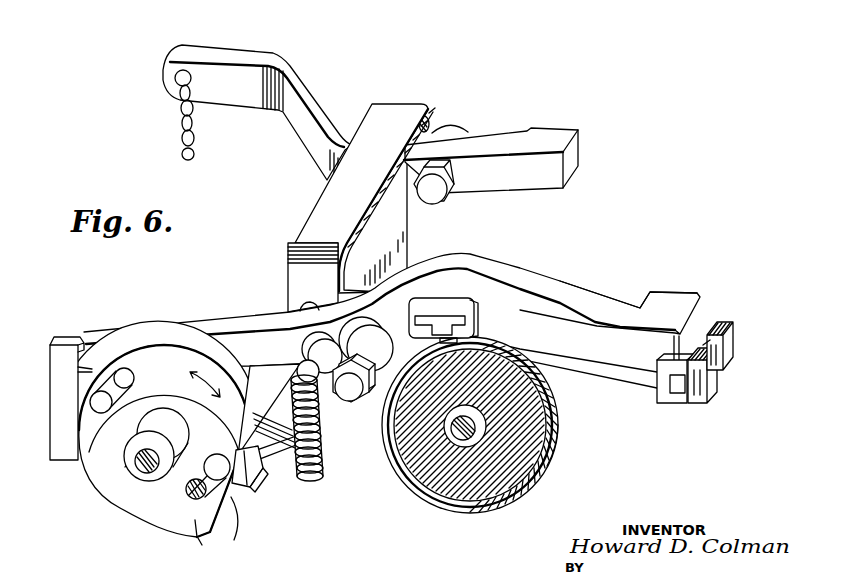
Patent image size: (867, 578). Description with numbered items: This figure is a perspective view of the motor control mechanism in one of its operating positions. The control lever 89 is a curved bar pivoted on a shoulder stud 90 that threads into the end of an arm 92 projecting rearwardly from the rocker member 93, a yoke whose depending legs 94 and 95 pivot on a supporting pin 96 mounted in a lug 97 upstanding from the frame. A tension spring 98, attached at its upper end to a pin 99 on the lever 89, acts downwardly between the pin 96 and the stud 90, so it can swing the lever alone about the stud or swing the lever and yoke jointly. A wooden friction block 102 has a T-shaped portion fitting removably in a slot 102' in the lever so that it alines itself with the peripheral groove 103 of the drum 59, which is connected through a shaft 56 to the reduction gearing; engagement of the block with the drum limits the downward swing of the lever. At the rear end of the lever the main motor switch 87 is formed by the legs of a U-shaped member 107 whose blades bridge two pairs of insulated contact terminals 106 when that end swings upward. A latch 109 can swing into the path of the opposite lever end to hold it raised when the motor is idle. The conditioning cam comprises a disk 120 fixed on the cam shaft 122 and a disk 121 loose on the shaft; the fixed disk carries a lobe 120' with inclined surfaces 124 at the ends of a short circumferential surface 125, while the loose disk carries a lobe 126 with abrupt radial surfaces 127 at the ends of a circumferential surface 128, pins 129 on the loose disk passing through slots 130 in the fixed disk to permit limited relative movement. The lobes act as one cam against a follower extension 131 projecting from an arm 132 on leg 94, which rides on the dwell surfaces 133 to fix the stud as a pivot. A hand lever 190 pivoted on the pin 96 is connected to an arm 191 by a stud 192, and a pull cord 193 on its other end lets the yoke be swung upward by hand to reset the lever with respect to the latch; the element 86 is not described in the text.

The lever 190 is at (323, 126).
The pull cord 193 is at (198, 154).
The depending leg 95 is at (430, 120).
The arm 191 is at (447, 133).
The stud 192 is at (456, 176).
The rocker member 93 is at (316, 224).
The lug 97 is at (413, 214).
The arm 92 is at (378, 287).
The depending leg 94 is at (297, 278).
The supporting pin 96 is at (303, 303).
The lever 89 is at (583, 302).
The main motor switch 87 is at (742, 314).
The slot 102' is at (441, 310).
The pawl guide 86 is at (479, 313).
The block 102 is at (513, 414).
The shoulder stud 90 is at (381, 343).
The drum 59 is at (548, 373).
The peripheral groove 103 is at (544, 422).
The contact terminals 106 is at (727, 340).
The U-shaped member 107 is at (675, 396).
The pin 99 is at (322, 395).
The tension spring 98 is at (318, 472).
The shaft 56 is at (491, 416).
The disk 120 is at (165, 435).
The disk 121 is at (163, 334).
The dwell surfaces 133 is at (203, 351).
The arm 132 is at (283, 380).
The extension 131 is at (262, 430).
The slots 130 is at (130, 384).
The pins 129 is at (110, 401).
The latch 109 is at (60, 455).
The cam shaft 122 is at (140, 465).
The inclined surfaces 124 is at (170, 529).
The circumferential surface 125 is at (200, 537).
The lobe 120' is at (196, 557).
The surfaces 127 is at (256, 486).
The lobe 126 is at (246, 492).
The circumferential surface 128 is at (241, 505).